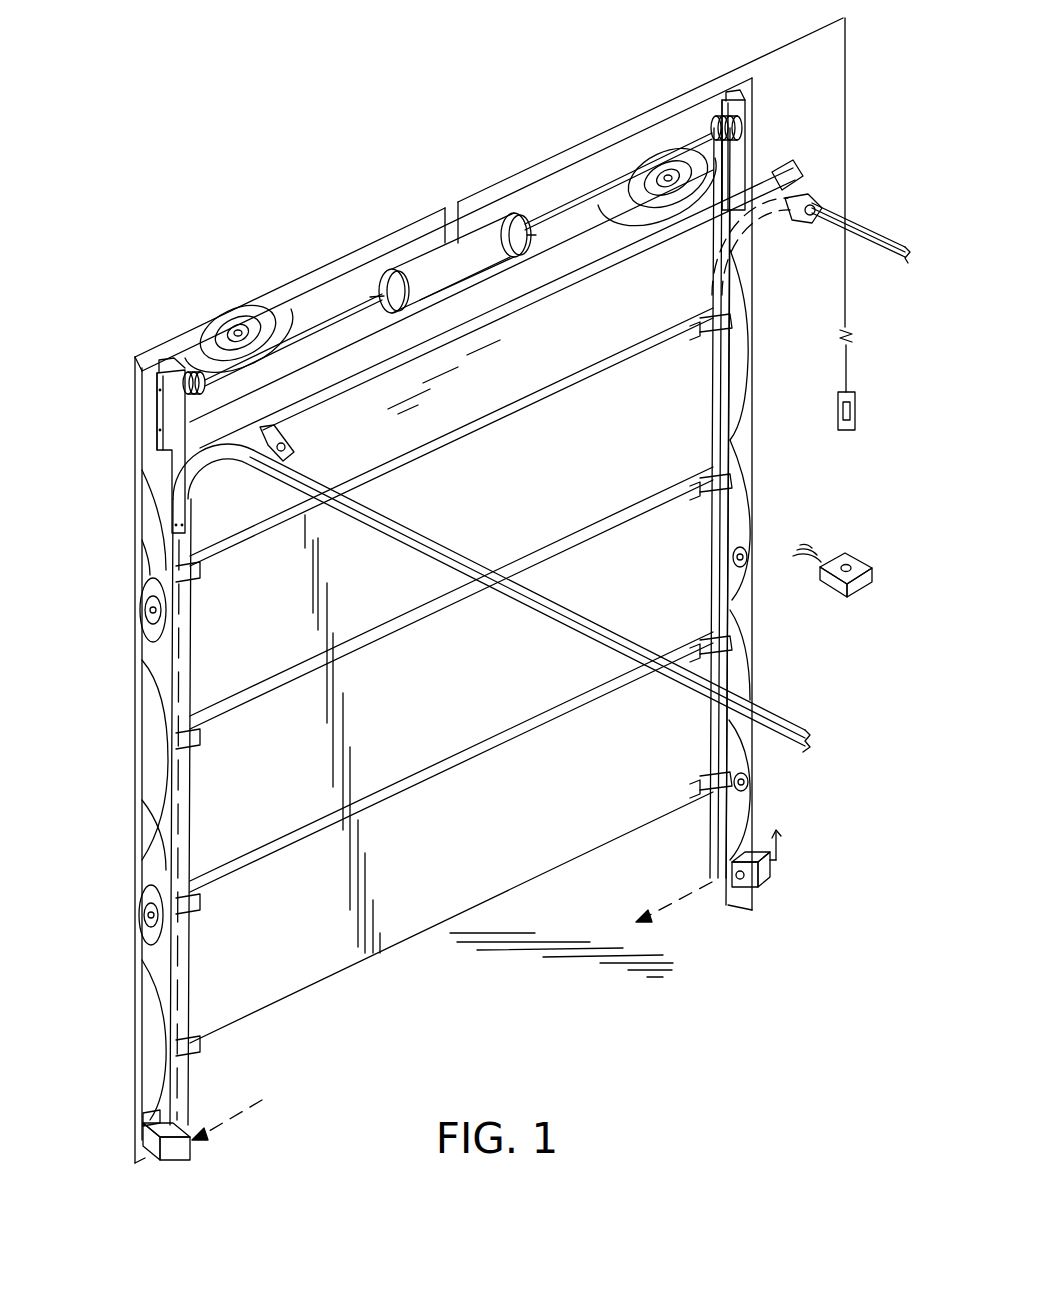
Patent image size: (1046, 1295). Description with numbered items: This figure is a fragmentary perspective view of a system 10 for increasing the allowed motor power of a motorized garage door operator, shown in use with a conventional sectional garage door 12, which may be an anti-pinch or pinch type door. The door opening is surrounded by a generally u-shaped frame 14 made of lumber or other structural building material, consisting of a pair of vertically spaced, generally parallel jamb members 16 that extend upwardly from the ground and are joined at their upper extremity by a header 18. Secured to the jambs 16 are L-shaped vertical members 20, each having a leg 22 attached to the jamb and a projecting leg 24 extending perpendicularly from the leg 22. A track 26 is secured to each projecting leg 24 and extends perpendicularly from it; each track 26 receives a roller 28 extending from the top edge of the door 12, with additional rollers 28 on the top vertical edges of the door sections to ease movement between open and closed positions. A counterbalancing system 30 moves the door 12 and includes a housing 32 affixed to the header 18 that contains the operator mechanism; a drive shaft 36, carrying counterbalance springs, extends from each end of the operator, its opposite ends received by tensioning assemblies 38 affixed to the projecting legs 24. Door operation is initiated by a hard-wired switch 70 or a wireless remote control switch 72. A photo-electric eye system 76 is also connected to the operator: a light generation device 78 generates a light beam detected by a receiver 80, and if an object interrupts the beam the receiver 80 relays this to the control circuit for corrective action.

The system 10 is at (379, 118).
The sectional garage door 12 is at (690, 401).
The frame 14 is at (296, 290).
The jamb members 16 is at (148, 975).
The header 18 is at (283, 313).
The L-shaped vertical members 20 is at (148, 422).
The leg 22 is at (159, 380).
The projecting leg 24 is at (172, 427).
The track 26 is at (410, 540).
The roller 28 is at (276, 460).
The counterbalancing system 30 is at (418, 232).
The housing 32 is at (482, 233).
The drive shaft 36 is at (340, 312).
The tensioning assemblies 38 is at (194, 372).
The hard-wired switch 70 is at (847, 432).
The wireless remote control switch 72 is at (855, 598).
The photo-electric eye system 76 is at (800, 890).
The light generation device 78 is at (754, 884).
The receiver 80 is at (181, 1155).